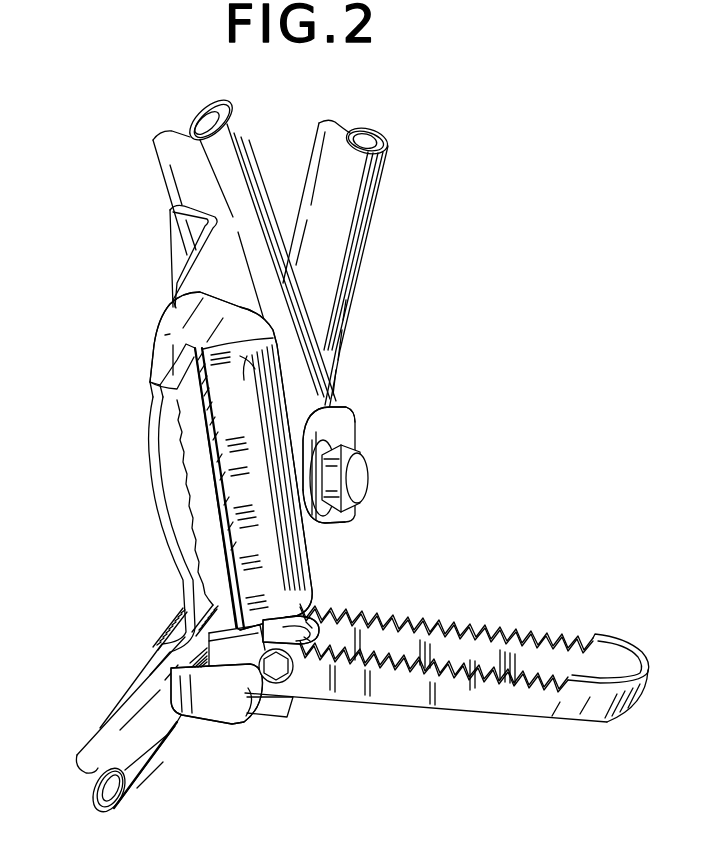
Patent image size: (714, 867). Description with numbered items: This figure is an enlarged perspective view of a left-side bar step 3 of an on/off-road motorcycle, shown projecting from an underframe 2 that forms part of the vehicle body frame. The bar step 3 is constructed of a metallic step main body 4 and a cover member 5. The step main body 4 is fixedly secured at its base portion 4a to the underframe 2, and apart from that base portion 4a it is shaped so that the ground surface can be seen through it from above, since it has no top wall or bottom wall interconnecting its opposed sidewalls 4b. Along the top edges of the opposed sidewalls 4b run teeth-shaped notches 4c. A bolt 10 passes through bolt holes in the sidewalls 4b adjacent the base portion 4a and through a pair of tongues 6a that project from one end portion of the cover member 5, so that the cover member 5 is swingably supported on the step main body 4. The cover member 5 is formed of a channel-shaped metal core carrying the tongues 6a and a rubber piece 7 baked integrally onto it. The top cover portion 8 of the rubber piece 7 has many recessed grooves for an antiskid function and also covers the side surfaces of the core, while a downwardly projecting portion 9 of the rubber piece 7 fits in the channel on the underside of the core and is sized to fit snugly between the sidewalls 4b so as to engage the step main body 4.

The underframe 2 is at (138, 755).
The bar step 3 is at (410, 701).
The step main body 4 is at (447, 671).
The base portion 4a is at (207, 720).
The sidewall 4b is at (493, 643).
The teeth-shaped notch 4c is at (387, 657).
The cover member 5 is at (180, 472).
The tongue 6a is at (323, 610).
The rubber piece 7 is at (193, 530).
The top cover portion 8 is at (190, 437).
The downwardly projecting portion 9 is at (287, 437).
The bolt 10 is at (275, 678).